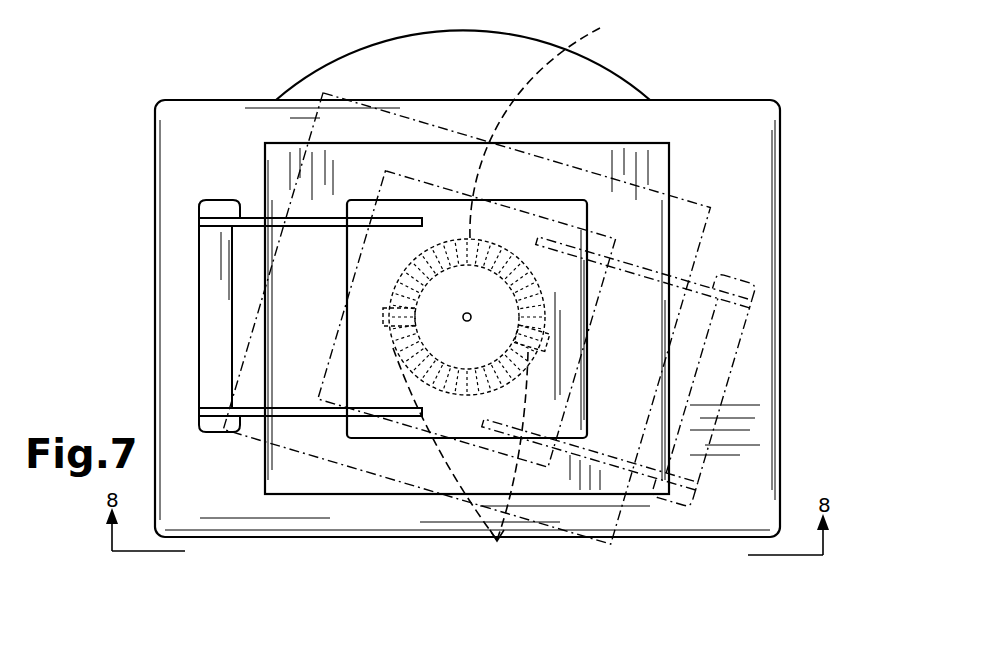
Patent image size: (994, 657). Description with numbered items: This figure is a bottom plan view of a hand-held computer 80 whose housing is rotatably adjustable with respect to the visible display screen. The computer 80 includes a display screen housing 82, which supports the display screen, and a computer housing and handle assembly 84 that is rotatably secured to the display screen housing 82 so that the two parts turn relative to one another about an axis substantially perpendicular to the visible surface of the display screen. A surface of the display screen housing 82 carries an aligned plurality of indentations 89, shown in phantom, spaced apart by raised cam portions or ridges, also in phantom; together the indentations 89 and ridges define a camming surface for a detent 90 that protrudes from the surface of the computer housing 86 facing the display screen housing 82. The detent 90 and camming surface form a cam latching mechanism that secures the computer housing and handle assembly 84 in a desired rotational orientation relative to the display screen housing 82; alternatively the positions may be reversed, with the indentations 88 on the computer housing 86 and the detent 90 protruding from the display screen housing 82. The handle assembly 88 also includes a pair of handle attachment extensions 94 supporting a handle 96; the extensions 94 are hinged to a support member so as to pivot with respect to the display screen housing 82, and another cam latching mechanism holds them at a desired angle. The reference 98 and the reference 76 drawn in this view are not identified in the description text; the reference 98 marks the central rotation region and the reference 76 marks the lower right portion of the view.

The base 76 is at (708, 405).
The hand-held computer 80 is at (120, 350).
The display screen housing 82 is at (190, 133).
The computer housing and handle assembly 84 is at (198, 180).
The computer housing 86 is at (600, 165).
The handle assembly 88 is at (557, 300).
The indentations 89 is at (600, 28).
The detent 90 is at (460, 465).
The handle attachment extensions 94 is at (247, 218).
The handle 96 is at (212, 335).
The rotary connector 98 is at (467, 317).